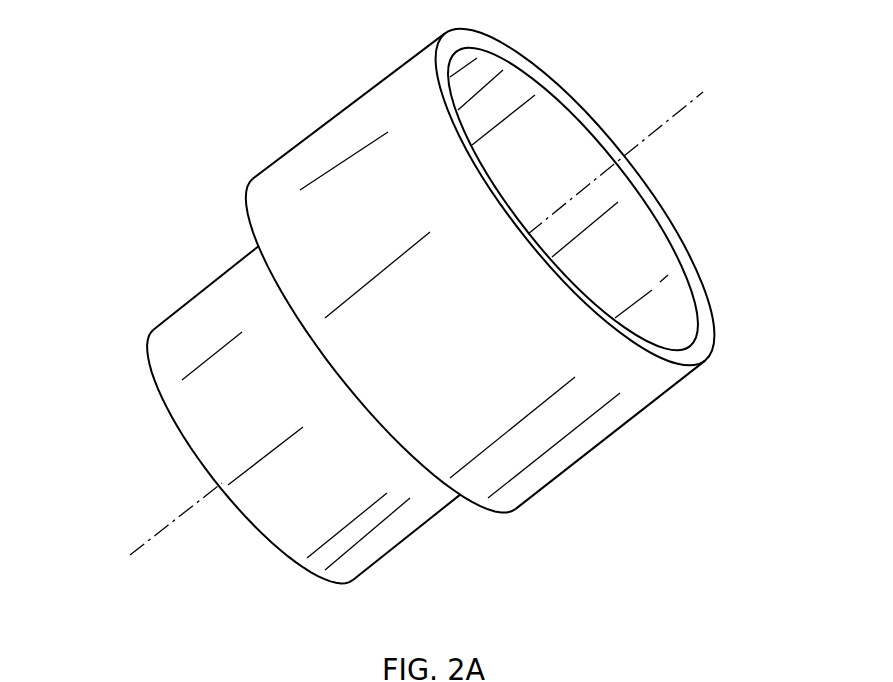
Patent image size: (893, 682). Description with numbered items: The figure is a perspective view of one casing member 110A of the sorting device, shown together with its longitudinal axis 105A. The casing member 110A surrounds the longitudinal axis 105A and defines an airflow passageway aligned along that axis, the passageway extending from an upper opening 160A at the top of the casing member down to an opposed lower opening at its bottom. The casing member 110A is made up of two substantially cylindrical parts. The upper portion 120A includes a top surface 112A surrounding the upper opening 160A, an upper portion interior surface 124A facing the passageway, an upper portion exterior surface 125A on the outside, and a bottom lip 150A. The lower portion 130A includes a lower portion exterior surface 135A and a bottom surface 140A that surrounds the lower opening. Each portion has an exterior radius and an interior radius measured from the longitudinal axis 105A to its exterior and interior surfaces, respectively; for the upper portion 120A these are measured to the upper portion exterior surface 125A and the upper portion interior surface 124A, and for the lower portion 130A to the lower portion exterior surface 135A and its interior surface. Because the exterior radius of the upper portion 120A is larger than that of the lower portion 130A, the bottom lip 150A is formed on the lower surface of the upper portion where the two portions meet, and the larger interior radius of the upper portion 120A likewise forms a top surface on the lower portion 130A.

The casing member 110A is at (117, 117).
The longitudinal axis 105A is at (703, 92).
The top surface 112A is at (568, 97).
The upper portion 120A is at (318, 115).
The upper portion interior surface 124A is at (557, 179).
The upper portion exterior surface 125A is at (450, 333).
The lower portion 130A is at (190, 277).
The lower portion exterior surface 135A is at (283, 409).
The bottom surface 140A is at (243, 513).
The bottom lip 150A is at (510, 514).
The upper opening 160A is at (698, 285).